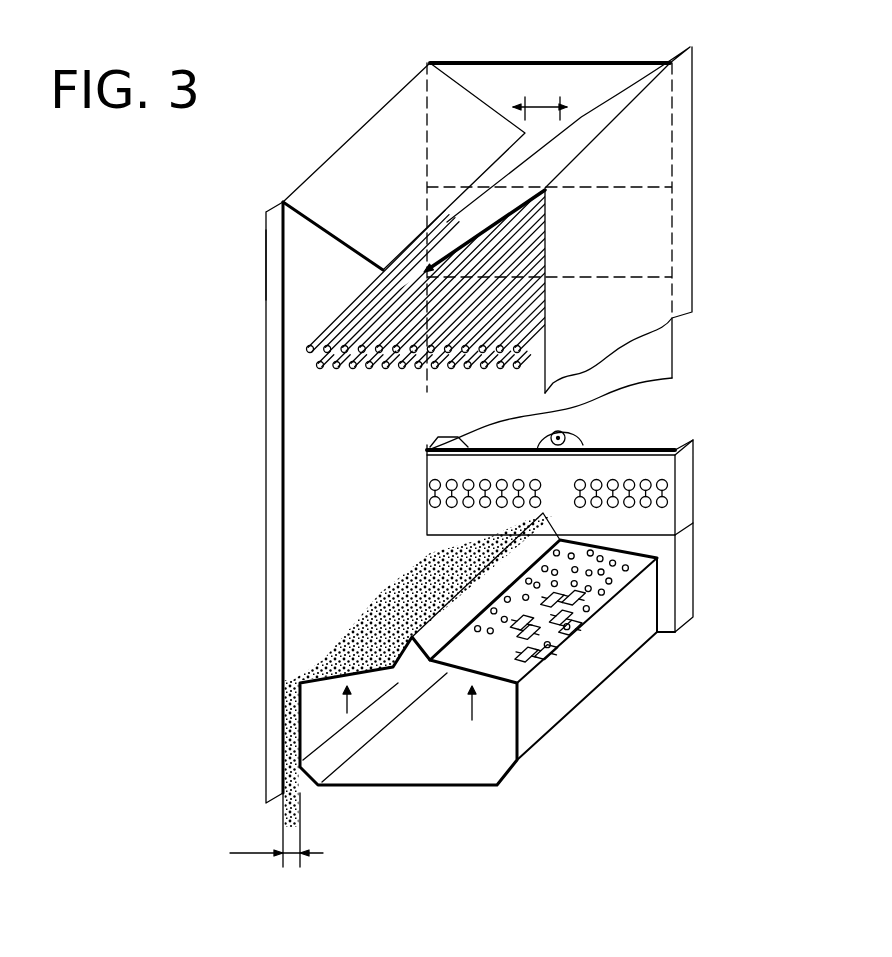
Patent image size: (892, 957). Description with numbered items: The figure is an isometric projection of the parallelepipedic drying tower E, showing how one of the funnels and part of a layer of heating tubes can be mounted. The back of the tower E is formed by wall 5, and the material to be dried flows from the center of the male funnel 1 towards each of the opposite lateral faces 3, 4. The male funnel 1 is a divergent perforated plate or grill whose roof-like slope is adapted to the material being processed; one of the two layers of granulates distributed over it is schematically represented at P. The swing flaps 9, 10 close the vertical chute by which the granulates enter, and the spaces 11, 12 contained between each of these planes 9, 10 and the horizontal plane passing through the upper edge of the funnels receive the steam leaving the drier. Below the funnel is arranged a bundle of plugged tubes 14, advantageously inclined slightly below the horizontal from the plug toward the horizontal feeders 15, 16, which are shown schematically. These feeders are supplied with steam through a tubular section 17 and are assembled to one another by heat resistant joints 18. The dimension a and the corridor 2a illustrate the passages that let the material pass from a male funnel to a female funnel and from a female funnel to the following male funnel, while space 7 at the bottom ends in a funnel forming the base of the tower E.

The male funnel 1 is at (552, 637).
The corridor 2a is at (565, 112).
The lateral face 3 is at (655, 250).
The lateral face 4 is at (292, 460).
The wall 5 is at (528, 83).
The space 7 is at (437, 762).
The swing flap 9 is at (367, 153).
The swing flap 10 is at (580, 137).
The space 11 is at (305, 242).
The space 12 is at (538, 223).
The plugged tubes 14 is at (305, 368).
The horizontal feeder 15 is at (663, 217).
The horizontal feeder 16 is at (688, 478).
The tubular section 17 is at (540, 445).
The heat resistant joint 18 is at (588, 440).
The tower E is at (262, 308).
The layer of granulates P is at (325, 637).
The corridor dimension a is at (242, 853).